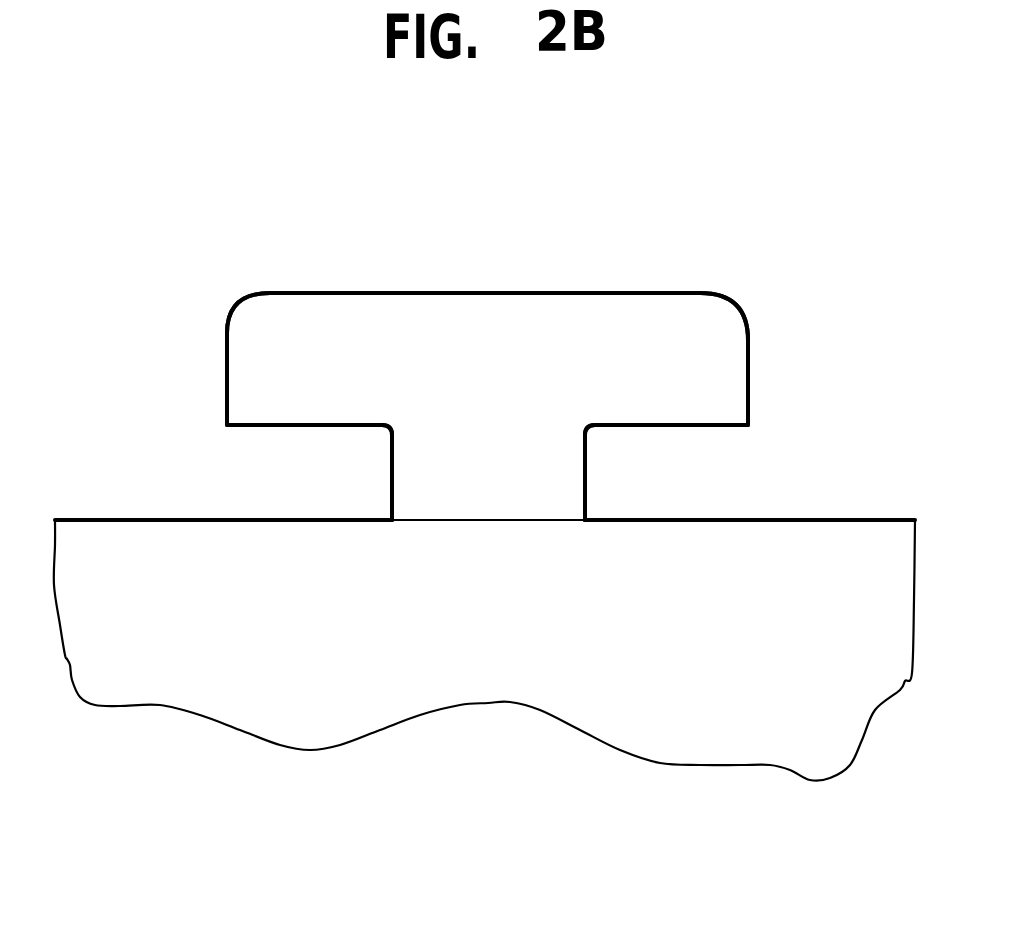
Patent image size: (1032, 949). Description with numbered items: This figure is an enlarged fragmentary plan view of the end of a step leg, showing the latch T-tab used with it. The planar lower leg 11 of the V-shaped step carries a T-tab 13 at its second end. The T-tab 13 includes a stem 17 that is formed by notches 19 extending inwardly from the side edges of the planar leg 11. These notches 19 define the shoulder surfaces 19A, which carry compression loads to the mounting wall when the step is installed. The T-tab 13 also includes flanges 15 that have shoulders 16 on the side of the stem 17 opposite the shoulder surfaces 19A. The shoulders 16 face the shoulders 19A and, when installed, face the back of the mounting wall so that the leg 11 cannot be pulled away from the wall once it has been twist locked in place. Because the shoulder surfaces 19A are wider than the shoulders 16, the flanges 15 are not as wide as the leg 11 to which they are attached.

The lower leg 11 is at (752, 735).
The T-tab 13 is at (485, 330).
The flanges 15 is at (225, 370).
The shoulders 16 is at (292, 428).
The stem 17 is at (528, 492).
The notches 19 is at (333, 477).
The shoulder surfaces 19A is at (240, 515).